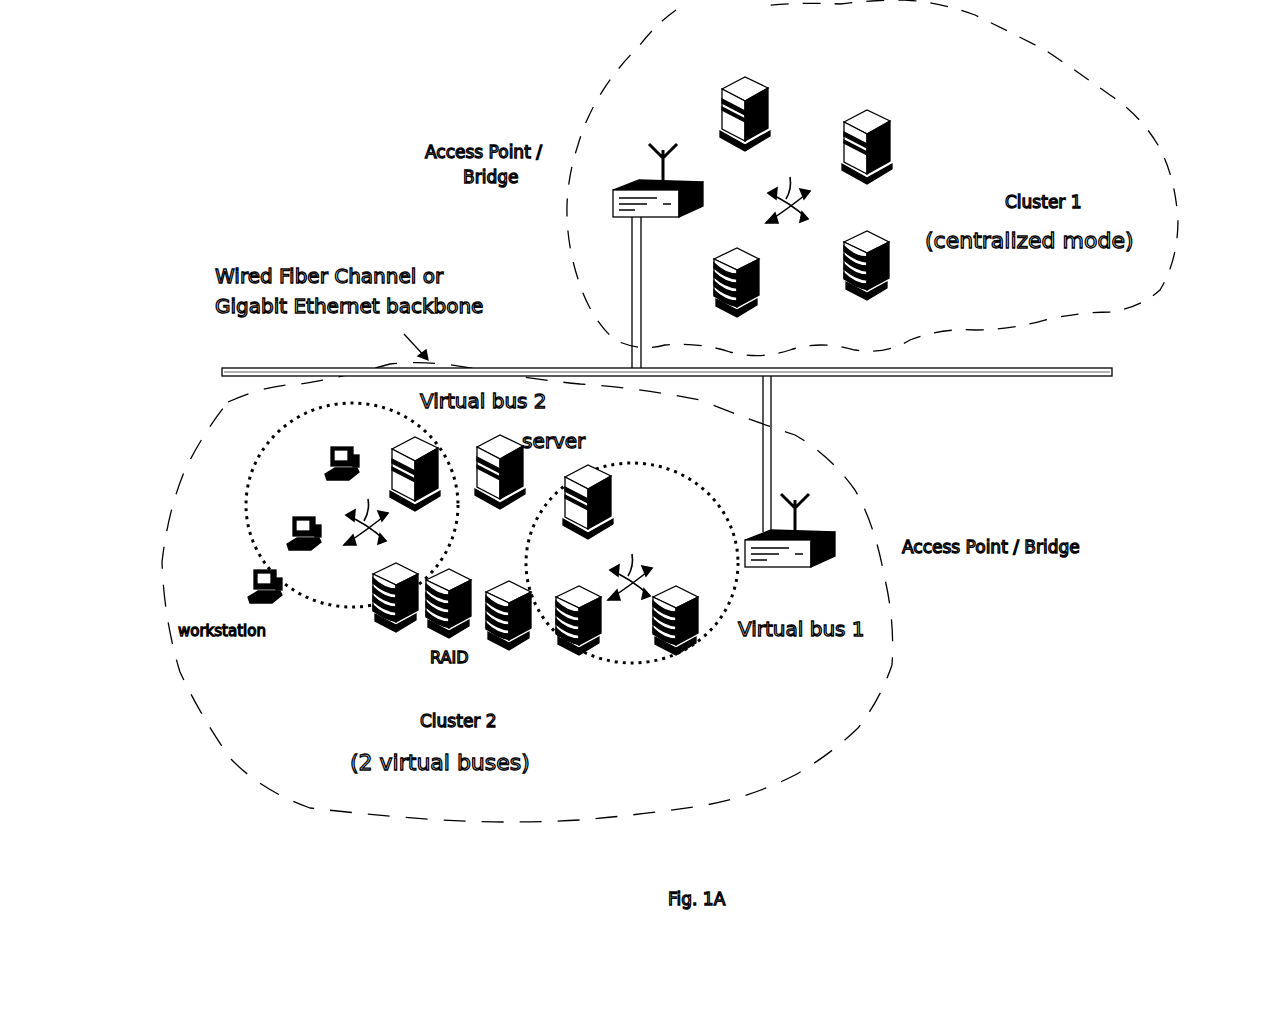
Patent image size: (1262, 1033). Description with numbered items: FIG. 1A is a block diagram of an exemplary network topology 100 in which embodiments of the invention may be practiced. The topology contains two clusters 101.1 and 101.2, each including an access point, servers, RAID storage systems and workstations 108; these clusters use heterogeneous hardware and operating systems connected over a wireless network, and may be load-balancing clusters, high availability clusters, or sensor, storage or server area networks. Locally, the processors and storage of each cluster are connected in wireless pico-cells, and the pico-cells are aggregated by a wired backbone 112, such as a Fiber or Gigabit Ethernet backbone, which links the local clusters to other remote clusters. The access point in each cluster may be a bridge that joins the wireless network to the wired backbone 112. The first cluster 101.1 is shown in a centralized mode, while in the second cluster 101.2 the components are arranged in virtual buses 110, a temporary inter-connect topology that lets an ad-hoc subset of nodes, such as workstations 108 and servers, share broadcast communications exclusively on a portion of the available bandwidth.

The network system 100 is at (173, 146).
The cluster 101.1 is at (1142, 290).
The cluster 101.2 is at (1030, 740).
The workstation 108 is at (338, 450).
The virtual bus 110 is at (345, 405).
The wired backbone 112 is at (997, 378).